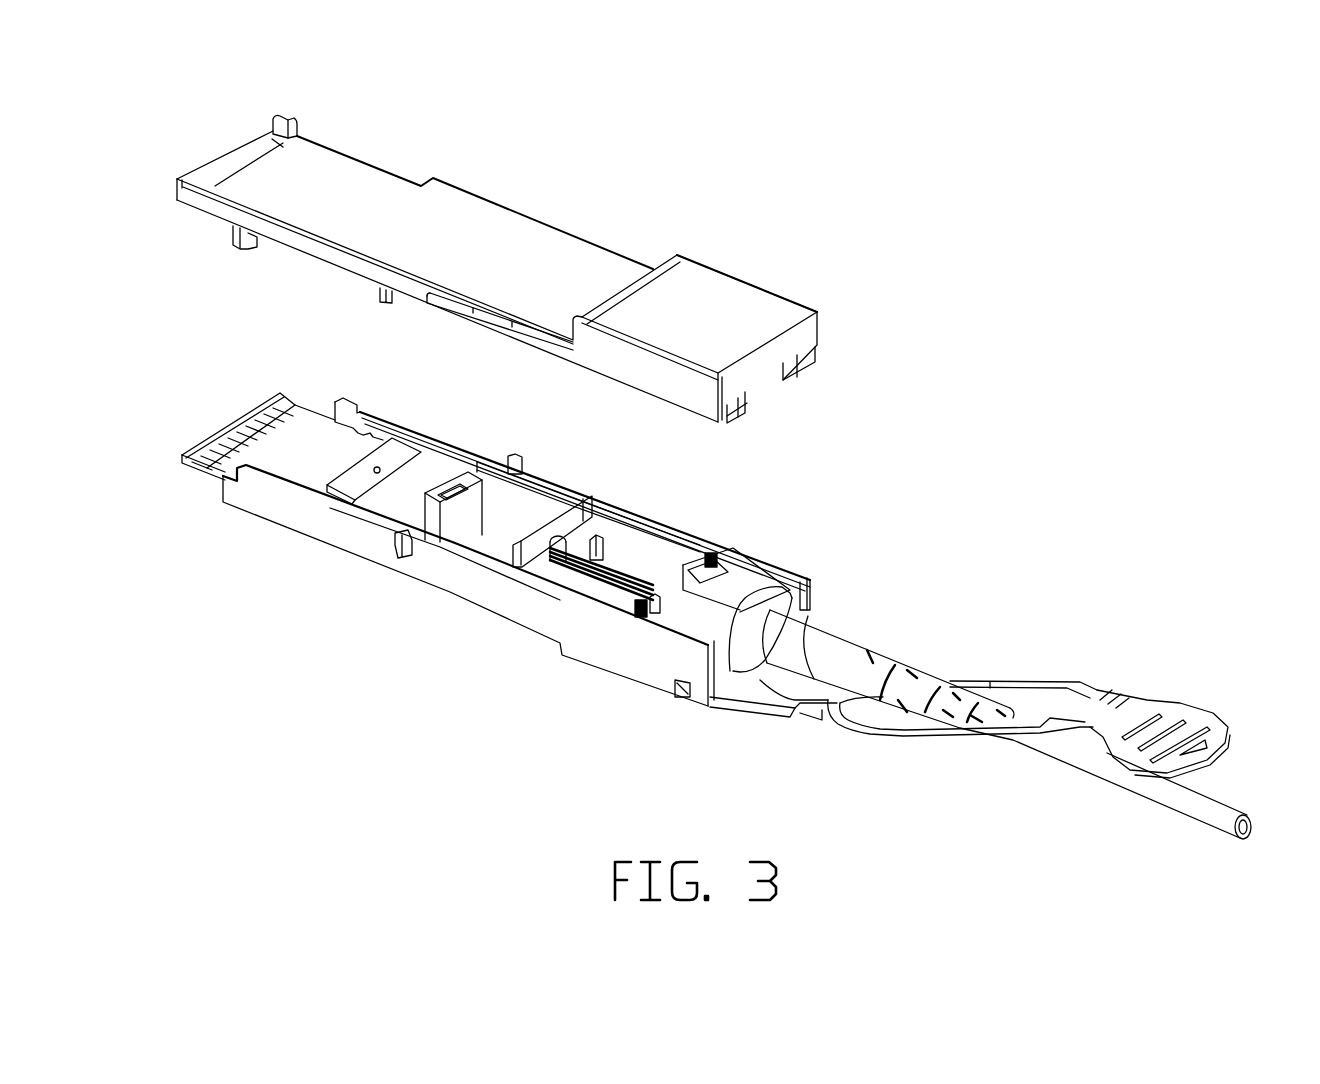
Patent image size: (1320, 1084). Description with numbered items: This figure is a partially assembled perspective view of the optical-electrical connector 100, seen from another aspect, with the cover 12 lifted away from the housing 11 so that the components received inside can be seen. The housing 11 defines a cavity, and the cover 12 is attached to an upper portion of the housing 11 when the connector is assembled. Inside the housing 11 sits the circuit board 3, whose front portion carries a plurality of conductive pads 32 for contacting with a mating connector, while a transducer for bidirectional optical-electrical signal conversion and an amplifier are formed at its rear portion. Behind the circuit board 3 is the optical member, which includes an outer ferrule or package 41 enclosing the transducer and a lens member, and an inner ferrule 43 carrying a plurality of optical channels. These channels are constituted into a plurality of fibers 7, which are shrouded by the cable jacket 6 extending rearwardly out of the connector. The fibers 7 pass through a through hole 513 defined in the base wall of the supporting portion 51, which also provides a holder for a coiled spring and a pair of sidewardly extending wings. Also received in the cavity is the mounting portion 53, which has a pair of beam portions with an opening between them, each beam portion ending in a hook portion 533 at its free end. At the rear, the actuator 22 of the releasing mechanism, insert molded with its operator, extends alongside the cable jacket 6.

The optical-electrical connector 100 is at (820, 199).
The housing 11 is at (270, 497).
The cover 12 is at (710, 313).
The circuit board 3 is at (227, 482).
The conductive pads 32 is at (213, 436).
The outer ferrule 41 is at (400, 482).
The inner ferrule 43 is at (445, 530).
The supporting portion 51 is at (542, 570).
The through hole 513 is at (553, 540).
The hook portion 533 is at (663, 603).
The mounting portion 53 is at (700, 610).
The fibers 7 is at (597, 575).
The cable jacket 6 is at (867, 673).
The actuator 22 is at (1100, 700).